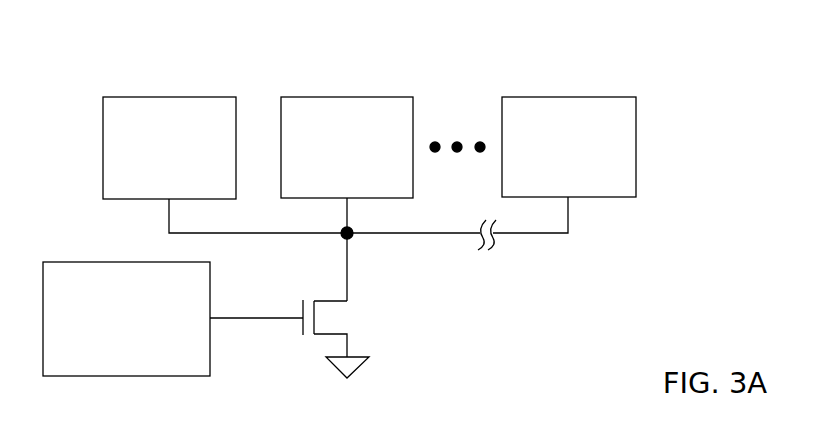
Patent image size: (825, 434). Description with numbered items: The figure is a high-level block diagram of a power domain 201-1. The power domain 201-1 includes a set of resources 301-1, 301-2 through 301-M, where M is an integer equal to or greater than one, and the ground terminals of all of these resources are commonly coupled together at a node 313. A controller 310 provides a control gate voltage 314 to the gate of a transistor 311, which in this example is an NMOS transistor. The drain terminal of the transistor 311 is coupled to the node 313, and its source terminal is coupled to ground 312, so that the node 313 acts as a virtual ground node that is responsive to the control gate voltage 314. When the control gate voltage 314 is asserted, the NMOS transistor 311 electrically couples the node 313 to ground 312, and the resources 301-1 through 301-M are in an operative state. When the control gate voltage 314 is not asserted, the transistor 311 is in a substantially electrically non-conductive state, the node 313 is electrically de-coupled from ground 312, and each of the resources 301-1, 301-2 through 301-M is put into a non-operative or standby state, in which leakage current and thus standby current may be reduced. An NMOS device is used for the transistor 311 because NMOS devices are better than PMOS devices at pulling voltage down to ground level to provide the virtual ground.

The power domain 201-1 is at (668, 52).
The resource 301-1 is at (151, 165).
The resource 301-2 is at (328, 165).
The resource 301-M is at (548, 165).
The controller 310 is at (113, 336).
The transistor 311 is at (355, 319).
The ground 312 is at (363, 365).
The node 313 is at (353, 236).
The control gate voltage 314 is at (243, 318).